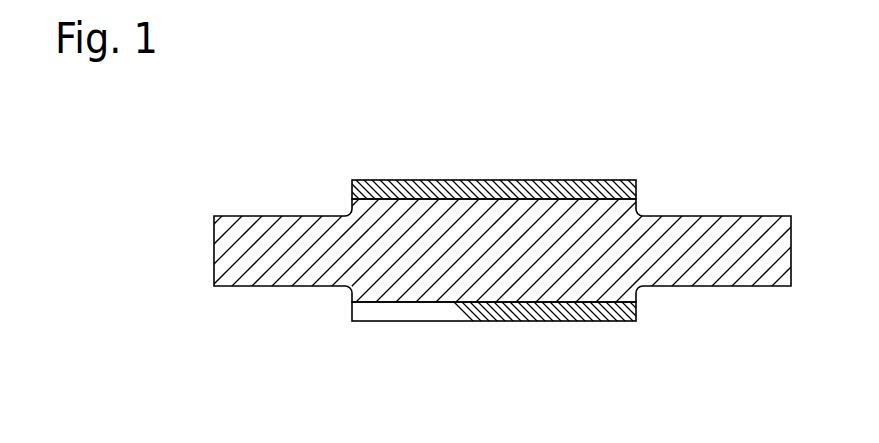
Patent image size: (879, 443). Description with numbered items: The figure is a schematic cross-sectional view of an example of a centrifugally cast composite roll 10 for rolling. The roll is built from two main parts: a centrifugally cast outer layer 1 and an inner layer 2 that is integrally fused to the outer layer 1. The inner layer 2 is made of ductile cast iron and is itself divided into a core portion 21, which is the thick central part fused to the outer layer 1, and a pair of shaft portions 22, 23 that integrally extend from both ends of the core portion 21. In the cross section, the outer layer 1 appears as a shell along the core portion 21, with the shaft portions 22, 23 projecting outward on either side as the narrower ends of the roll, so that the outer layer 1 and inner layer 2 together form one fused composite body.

The centrifugally cast composite roll 10 is at (483, 216).
The outer layer 1 is at (436, 182).
The inner layer 2 is at (483, 238).
The core portion 21 is at (500, 223).
The shaft portion 22 is at (280, 228).
The shaft portion 23 is at (724, 224).